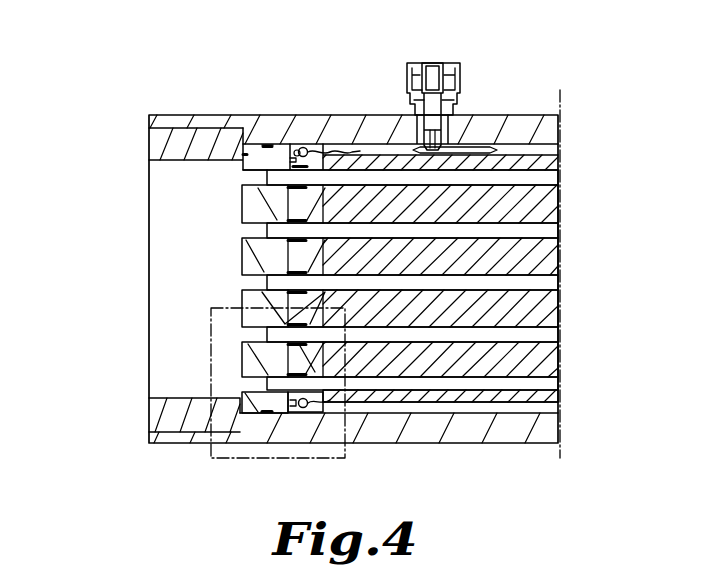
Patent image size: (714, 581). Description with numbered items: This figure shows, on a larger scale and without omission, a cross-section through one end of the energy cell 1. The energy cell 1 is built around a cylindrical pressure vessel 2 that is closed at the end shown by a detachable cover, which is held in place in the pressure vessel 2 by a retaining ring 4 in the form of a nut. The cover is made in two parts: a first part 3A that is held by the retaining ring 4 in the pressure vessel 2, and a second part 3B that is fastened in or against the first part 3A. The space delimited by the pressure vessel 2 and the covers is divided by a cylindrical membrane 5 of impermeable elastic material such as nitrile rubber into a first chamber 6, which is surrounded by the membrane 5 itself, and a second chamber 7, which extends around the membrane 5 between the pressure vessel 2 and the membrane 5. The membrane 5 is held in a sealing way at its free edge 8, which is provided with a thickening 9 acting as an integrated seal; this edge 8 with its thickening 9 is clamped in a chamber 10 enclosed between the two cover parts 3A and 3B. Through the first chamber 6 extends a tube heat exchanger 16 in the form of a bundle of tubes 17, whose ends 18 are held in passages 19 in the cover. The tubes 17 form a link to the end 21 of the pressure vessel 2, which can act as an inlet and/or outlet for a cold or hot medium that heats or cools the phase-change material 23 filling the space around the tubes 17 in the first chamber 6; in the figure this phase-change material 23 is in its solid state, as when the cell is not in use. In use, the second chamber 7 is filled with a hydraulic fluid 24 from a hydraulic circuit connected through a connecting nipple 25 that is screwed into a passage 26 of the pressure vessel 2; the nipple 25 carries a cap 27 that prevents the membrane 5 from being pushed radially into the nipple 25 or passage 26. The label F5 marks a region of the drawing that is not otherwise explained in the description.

The energy cell 1 is at (165, 94).
The pressure vessel 2 is at (335, 132).
The first part 3A is at (257, 410).
The second part 3B is at (314, 398).
The retaining ring 4 is at (159, 412).
The membrane 5 is at (367, 157).
The first chamber 6 is at (540, 155).
The second chamber 7 is at (492, 153).
The free edge 8 is at (348, 153).
The thickening 9 is at (304, 148).
The chamber 10 is at (297, 150).
The tube heat exchanger 16 is at (577, 171).
The tubes 17 is at (535, 228).
The ends 18 is at (266, 333).
The passages 19 is at (345, 395).
The end 21 is at (181, 358).
The phase-change material 23 is at (553, 302).
The hydraulic fluid 24 is at (523, 410).
The connecting nipple 25 is at (452, 63).
The passage 26 is at (448, 147).
The cap 27 is at (417, 150).
The force F5 is at (212, 458).